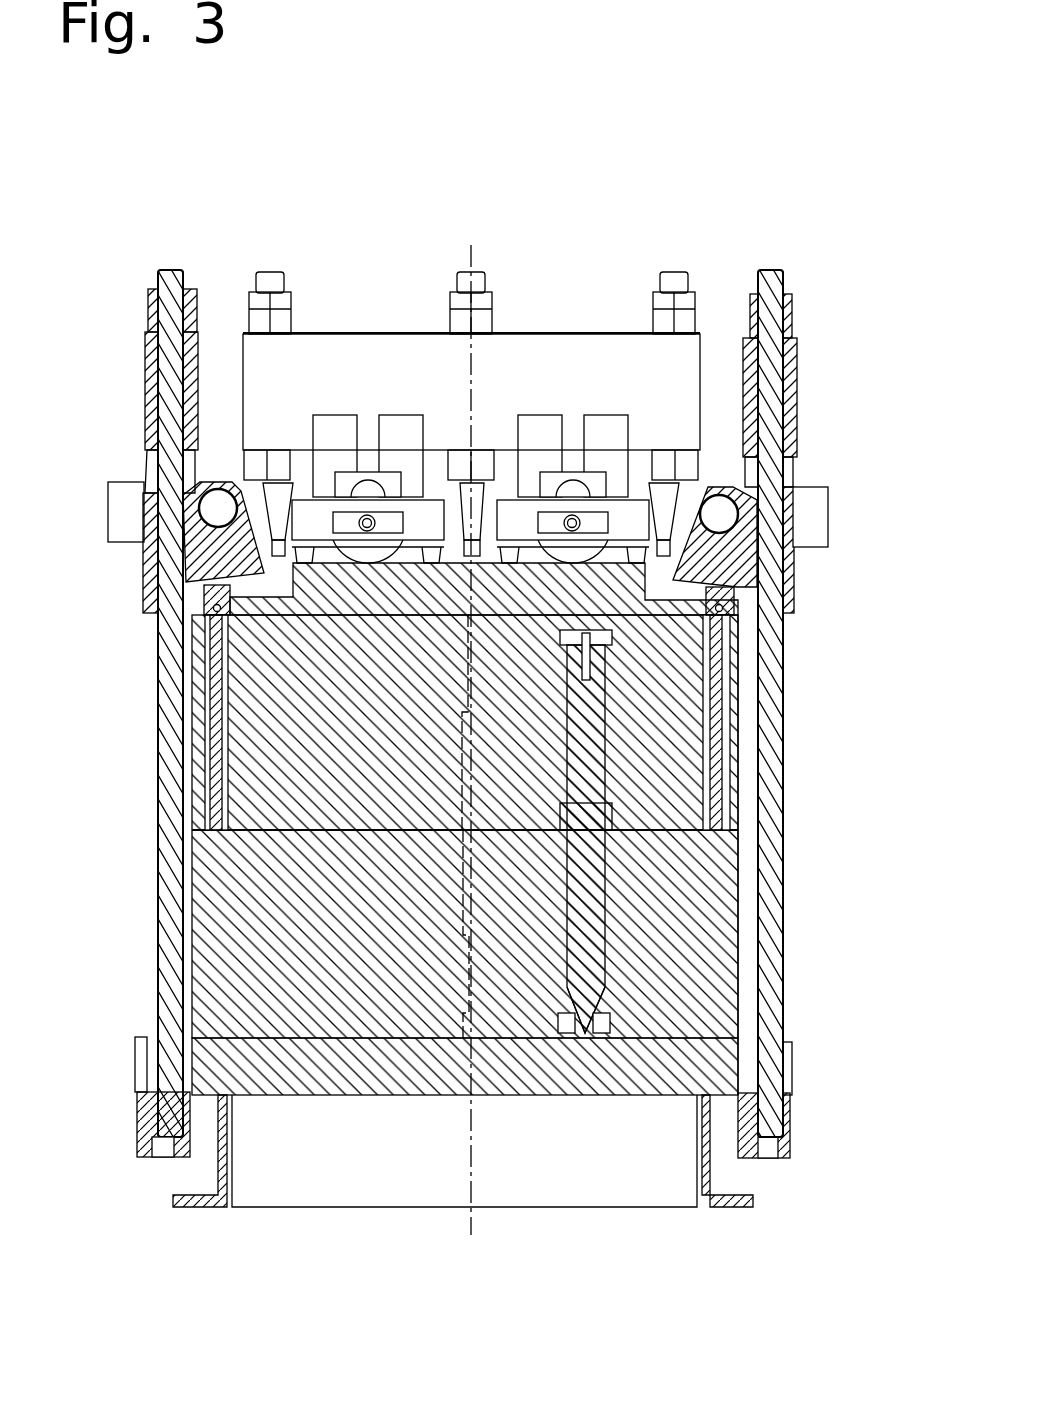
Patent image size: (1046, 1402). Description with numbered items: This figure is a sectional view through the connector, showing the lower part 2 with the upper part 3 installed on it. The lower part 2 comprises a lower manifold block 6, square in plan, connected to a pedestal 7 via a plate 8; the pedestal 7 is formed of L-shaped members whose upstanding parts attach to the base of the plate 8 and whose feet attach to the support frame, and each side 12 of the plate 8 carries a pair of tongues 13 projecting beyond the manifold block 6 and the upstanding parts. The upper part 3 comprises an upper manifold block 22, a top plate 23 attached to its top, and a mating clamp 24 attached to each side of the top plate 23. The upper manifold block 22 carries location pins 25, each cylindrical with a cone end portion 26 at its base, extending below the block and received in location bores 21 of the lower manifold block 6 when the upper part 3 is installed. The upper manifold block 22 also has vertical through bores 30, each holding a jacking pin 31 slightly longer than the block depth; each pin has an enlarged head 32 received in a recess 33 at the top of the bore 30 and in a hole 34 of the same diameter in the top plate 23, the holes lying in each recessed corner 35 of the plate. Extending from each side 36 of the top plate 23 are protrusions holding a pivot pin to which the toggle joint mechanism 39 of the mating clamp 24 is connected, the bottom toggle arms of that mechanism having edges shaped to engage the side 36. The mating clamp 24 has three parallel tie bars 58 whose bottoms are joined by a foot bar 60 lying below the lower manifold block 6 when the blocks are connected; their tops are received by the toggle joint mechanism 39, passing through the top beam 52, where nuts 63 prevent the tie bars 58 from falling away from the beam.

The lower part 2 is at (122, 985).
The upper part 3 is at (118, 592).
The lower manifold block 6 is at (748, 958).
The pedestal 7 is at (747, 1274).
The plate 8 is at (413, 1075).
The side of the plate 12 is at (742, 1072).
The tongues 13 is at (795, 1085).
The location bores 21 is at (615, 997).
The upper manifold block 22 is at (748, 720).
The top plate 23 is at (450, 573).
The mating clamp 24 is at (888, 374).
The location pin 25 is at (600, 900).
The cone end portion 26 is at (578, 1047).
The vertical through bores 30 is at (205, 800).
The jacking pin 31 is at (207, 768).
The head 32 is at (150, 430).
The recess 33 is at (205, 622).
The hole 34 is at (150, 490).
The recessed corner 35 is at (276, 590).
The side of the top plate 36 is at (745, 608).
The toggle joint mechanism 39 is at (820, 462).
The top beam 52 is at (802, 346).
The tie bars 58 is at (784, 772).
The foot bar 60 is at (795, 1130).
The nuts 63 is at (752, 292).